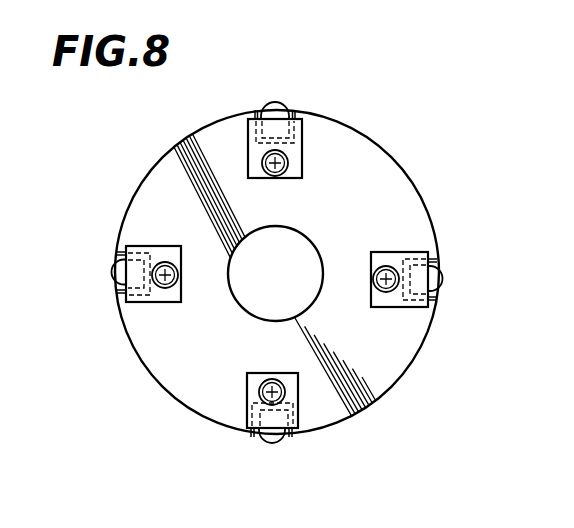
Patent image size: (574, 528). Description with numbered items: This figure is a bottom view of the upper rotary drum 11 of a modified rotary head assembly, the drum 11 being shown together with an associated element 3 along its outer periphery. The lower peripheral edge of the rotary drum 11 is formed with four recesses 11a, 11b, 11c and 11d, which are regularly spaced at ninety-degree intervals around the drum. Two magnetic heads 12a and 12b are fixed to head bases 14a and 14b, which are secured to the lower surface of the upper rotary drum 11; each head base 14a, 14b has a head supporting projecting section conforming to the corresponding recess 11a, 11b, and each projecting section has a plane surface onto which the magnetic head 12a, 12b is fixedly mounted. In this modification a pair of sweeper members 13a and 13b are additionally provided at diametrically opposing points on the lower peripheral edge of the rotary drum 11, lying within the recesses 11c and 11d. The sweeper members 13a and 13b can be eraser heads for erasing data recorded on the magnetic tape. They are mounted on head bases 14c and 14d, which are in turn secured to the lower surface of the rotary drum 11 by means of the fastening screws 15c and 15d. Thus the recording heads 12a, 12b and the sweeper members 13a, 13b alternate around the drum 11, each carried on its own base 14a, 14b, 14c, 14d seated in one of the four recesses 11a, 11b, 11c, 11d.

The rotor disc 3 is at (133, 198).
The upper rotary drum 11 is at (423, 150).
The recess 11a is at (288, 440).
The recess 11b is at (257, 108).
The recess 11c is at (117, 291).
The recess 11d is at (437, 298).
The magnetic head 12a is at (268, 443).
The magnetic head 12b is at (275, 103).
The sweeper member 13a is at (117, 268).
The sweeper member 13b is at (437, 275).
The head base 14a is at (252, 392).
The head base 14b is at (300, 160).
The head base 14c is at (167, 250).
The head base 14d is at (385, 256).
The fastening screw 15c is at (175, 280).
The fastening screw 15d is at (374, 288).